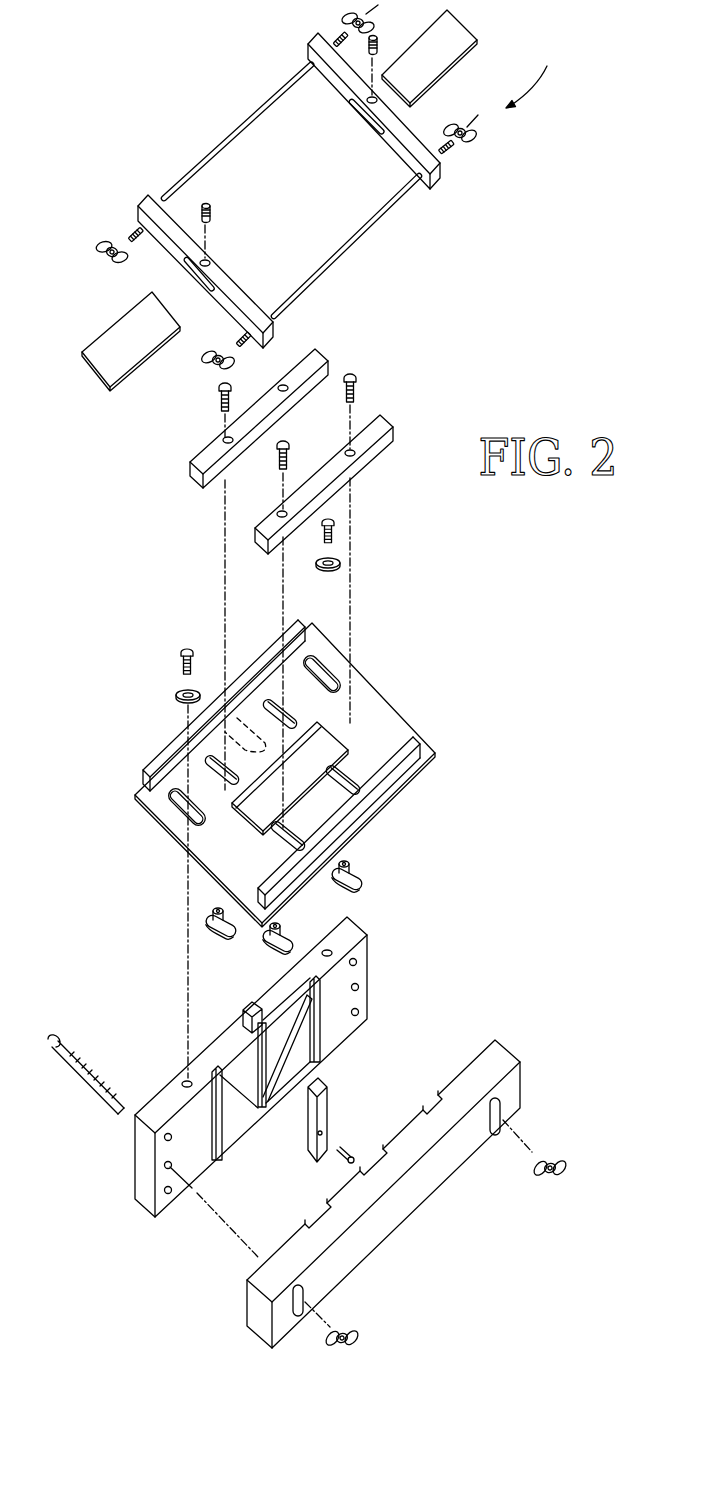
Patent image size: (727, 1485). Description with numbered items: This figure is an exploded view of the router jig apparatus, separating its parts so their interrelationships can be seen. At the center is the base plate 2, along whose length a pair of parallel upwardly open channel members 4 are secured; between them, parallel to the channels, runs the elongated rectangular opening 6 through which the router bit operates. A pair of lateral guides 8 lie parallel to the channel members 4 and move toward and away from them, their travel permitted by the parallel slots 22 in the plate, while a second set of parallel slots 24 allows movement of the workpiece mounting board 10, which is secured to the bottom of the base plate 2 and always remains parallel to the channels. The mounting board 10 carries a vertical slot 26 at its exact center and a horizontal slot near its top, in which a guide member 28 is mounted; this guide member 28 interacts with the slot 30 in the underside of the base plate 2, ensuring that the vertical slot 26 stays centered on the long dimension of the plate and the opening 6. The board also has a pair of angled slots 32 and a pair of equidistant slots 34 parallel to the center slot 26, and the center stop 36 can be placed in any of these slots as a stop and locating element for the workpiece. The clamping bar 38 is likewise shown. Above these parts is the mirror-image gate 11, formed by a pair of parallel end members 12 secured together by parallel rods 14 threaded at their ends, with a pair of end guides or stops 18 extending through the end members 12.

The base plate 2 is at (372, 697).
The upwardly open channel members 4 is at (257, 660).
The elongated rectangular opening 6 is at (342, 745).
The lateral guides 8 is at (190, 473).
The workpiece mounting board 10 is at (365, 942).
The gate element 11 is at (534, 78).
The end members 12 is at (395, 148).
The parallel rods 14 is at (245, 125).
The end guides or stops 18 is at (423, 56).
The parallel slots 22 is at (298, 832).
The parallel slots 24 is at (330, 670).
The vertical slot 26 is at (267, 1107).
The guide member 28 is at (243, 1008).
The slot 30 is at (233, 741).
The angled slots 32 is at (300, 1003).
The equidistant slots 34 is at (215, 1110).
The center stop 36 is at (327, 1107).
The clamping bar 38 is at (510, 1058).